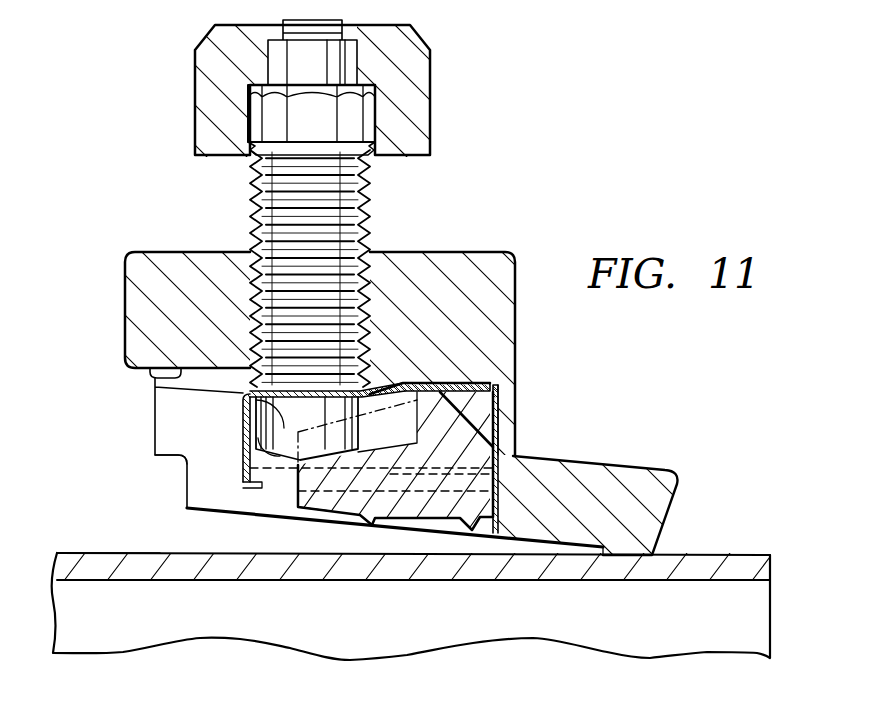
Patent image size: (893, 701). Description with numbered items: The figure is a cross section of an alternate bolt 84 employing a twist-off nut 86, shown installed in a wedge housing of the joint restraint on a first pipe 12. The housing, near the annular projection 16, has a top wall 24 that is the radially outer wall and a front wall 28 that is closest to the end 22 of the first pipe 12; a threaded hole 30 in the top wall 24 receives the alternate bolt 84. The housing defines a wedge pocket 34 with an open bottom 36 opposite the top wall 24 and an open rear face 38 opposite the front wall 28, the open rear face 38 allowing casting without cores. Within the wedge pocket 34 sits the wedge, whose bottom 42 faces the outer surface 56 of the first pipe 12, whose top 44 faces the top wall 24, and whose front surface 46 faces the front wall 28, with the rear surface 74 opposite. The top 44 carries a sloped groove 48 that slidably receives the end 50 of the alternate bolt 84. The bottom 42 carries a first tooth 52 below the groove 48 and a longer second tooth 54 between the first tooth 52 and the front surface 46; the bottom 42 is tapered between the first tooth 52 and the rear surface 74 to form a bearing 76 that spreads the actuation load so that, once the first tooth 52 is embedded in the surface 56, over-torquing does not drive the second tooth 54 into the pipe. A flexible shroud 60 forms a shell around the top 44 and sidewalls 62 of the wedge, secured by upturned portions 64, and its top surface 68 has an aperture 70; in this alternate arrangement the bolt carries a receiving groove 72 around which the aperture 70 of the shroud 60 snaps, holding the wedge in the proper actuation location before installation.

The first pipe 12 is at (710, 552).
The annular projection 16 is at (640, 470).
The end of the first pipe 22 is at (772, 568).
The top wall 24 is at (156, 376).
The front wall 28 is at (505, 425).
The hole 30 is at (373, 292).
The wedge pocket 34 is at (186, 489).
The open bottom 36 is at (215, 515).
The open rear face 38 is at (178, 465).
The bottom of the wedge 42 is at (418, 519).
The top of the wedge 44 is at (440, 384).
The front surface of the wedge 46 is at (497, 470).
The groove 48 is at (395, 442).
The end of the bolt 50 is at (245, 458).
The first tooth 52 is at (363, 524).
The second tooth 54 is at (466, 523).
The outer surface of the first pipe 56 is at (100, 552).
The shroud 60 is at (462, 383).
The sidewalls of the wedge 62 is at (433, 458).
The upturned portions 64 is at (263, 486).
The top surface of the shroud 68 is at (405, 388).
The aperture 70 is at (256, 410).
The receiving groove 72 is at (268, 425).
The rear surface of the wedge 74 is at (282, 519).
The bearing 76 is at (303, 513).
The alternate bolt 84 is at (607, 171).
The twist-off nut 86 is at (432, 85).